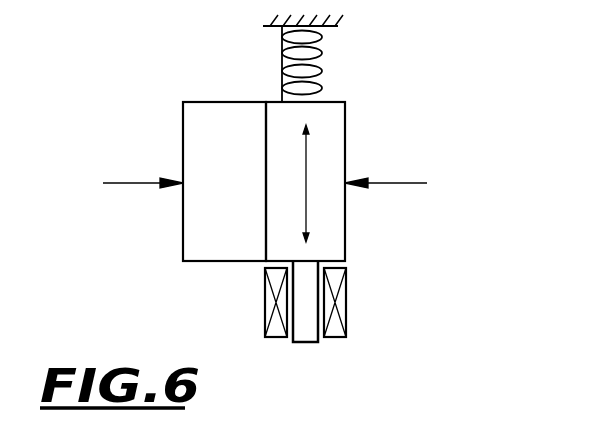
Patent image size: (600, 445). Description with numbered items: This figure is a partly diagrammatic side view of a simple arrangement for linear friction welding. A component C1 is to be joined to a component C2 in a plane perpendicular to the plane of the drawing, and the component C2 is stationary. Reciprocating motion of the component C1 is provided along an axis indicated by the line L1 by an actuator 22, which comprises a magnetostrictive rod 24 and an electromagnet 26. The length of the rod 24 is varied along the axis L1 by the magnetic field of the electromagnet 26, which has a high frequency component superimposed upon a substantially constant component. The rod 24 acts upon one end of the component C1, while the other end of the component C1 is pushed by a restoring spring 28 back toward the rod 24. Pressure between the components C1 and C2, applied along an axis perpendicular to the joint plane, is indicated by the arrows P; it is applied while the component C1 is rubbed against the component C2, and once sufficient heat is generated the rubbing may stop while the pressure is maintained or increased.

The restoring spring 28 is at (282, 53).
The component C2 is at (198, 236).
The component C1 is at (328, 238).
The line L1 is at (307, 177).
The arrows P is at (263, 187).
The electromagnet 26 is at (272, 305).
The magnetostrictive rod 24 is at (300, 333).
The actuator 22 is at (346, 348).